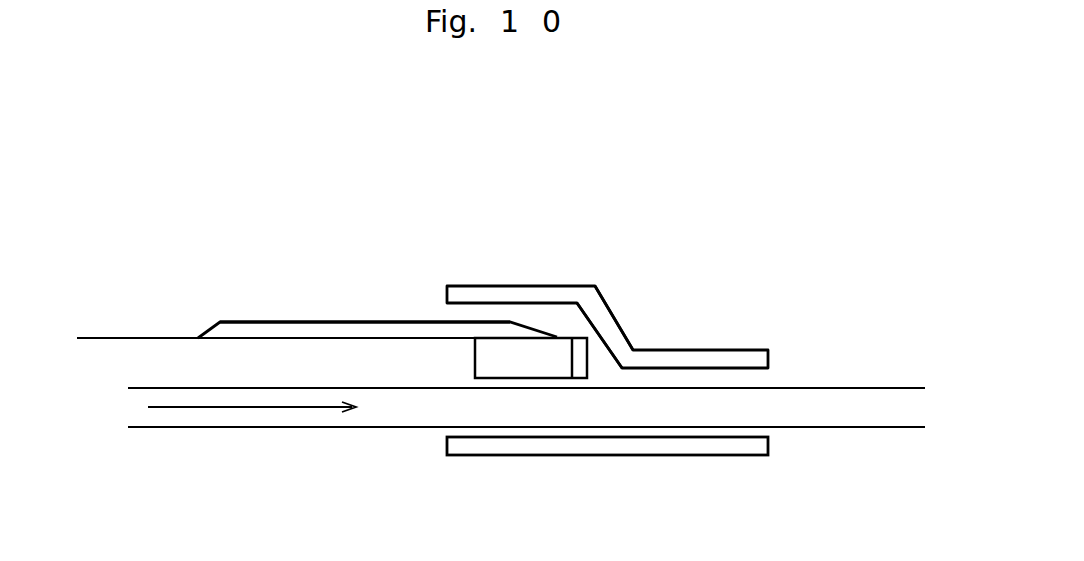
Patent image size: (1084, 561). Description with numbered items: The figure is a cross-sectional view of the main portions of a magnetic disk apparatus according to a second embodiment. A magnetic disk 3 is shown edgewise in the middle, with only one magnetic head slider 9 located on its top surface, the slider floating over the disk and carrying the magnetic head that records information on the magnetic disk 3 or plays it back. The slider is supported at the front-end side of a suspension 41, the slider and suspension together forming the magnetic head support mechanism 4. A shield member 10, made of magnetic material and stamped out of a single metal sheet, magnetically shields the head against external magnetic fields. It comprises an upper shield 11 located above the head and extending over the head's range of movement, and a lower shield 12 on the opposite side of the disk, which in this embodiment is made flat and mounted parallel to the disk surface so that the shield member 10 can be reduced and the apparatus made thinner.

The magnetic disk 3 is at (857, 412).
The magnetic head support mechanism 4 is at (283, 303).
The suspension 41 is at (351, 320).
The magnetic head slider 9 is at (515, 358).
The shield member 10 is at (718, 330).
The upper shield 11 is at (592, 308).
The lower shield 12 is at (597, 445).